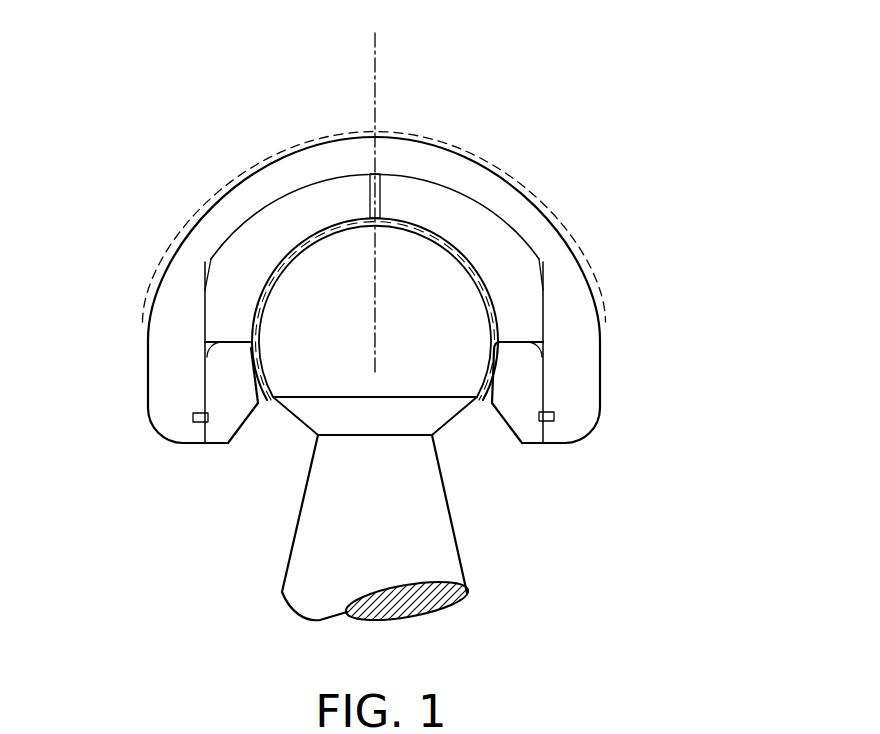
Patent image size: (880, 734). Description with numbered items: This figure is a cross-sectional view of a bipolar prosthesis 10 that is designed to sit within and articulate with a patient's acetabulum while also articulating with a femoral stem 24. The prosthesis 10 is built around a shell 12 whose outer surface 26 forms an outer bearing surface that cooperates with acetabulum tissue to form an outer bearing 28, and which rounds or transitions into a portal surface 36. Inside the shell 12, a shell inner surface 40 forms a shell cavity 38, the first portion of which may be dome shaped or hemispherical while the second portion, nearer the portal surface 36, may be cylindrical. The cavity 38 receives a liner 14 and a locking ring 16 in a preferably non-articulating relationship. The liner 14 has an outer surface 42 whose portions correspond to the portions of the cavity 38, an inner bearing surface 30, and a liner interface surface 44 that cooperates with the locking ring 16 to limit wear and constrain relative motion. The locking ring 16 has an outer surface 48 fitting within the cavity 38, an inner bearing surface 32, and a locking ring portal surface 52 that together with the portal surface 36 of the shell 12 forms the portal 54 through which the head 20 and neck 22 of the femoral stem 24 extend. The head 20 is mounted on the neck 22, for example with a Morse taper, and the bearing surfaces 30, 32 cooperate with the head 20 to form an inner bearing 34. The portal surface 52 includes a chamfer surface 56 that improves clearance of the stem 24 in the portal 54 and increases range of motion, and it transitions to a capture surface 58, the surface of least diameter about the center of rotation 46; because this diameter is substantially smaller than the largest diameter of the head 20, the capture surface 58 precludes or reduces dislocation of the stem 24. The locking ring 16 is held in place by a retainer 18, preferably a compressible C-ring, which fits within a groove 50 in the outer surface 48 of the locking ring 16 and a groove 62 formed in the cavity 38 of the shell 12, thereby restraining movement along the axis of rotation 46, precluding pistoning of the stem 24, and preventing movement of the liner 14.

The bipolar prosthesis 10 is at (494, 94).
The shell 12 is at (364, 257).
The liner 14 is at (458, 328).
The locking ring 16 is at (599, 424).
The retainer 18 is at (557, 414).
The head 20 is at (443, 327).
The neck 22 is at (442, 532).
The femoral stem 24 is at (480, 589).
The outer surface 26 is at (233, 185).
The outer bearing 28 is at (193, 215).
The inner bearing surface of liner 30 is at (167, 469).
The inner bearing surface of locking ring 32 is at (250, 355).
The inner bearing 34 is at (247, 360).
The portal surface 36 is at (193, 445).
The shell cavity 38 is at (337, 175).
The shell inner surface 40 is at (273, 200).
The outer surface of liner 42 is at (457, 281).
The liner interface surface 44 is at (498, 357).
The center of rotation 46 is at (377, 67).
The outer surface of locking ring 48 is at (543, 398).
The groove 50 is at (539, 423).
The locking ring portal surface 52 is at (538, 438).
The portal 54 is at (234, 516).
The chamfer surface 56 is at (245, 440).
The capture surface 58 is at (257, 403).
The groove 62 is at (554, 418).